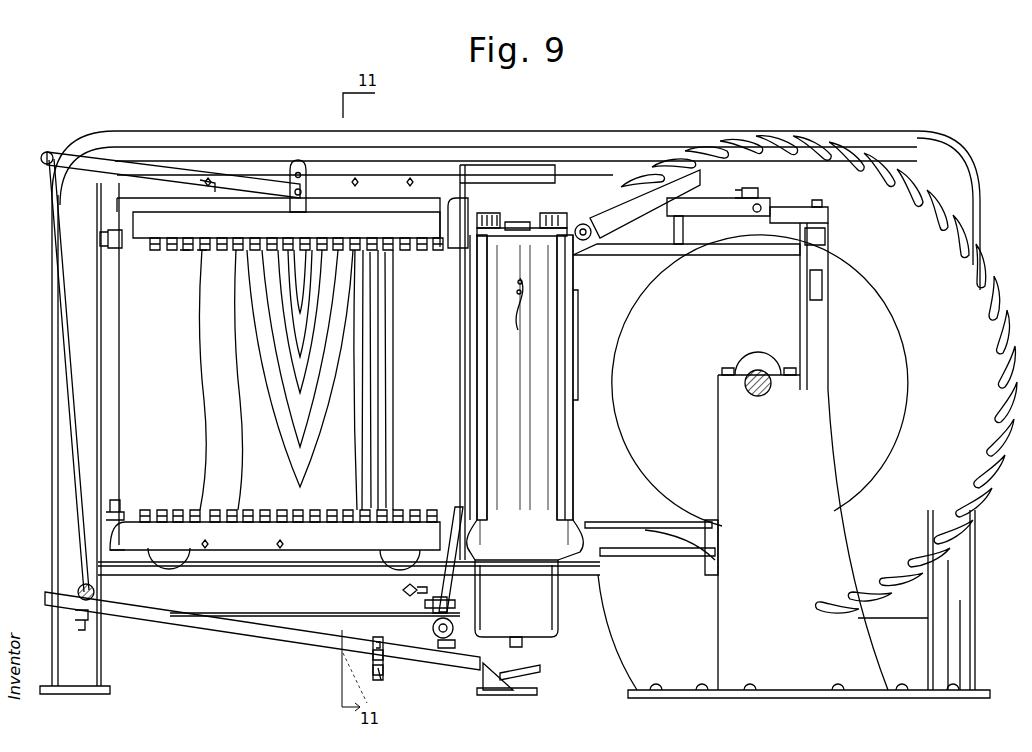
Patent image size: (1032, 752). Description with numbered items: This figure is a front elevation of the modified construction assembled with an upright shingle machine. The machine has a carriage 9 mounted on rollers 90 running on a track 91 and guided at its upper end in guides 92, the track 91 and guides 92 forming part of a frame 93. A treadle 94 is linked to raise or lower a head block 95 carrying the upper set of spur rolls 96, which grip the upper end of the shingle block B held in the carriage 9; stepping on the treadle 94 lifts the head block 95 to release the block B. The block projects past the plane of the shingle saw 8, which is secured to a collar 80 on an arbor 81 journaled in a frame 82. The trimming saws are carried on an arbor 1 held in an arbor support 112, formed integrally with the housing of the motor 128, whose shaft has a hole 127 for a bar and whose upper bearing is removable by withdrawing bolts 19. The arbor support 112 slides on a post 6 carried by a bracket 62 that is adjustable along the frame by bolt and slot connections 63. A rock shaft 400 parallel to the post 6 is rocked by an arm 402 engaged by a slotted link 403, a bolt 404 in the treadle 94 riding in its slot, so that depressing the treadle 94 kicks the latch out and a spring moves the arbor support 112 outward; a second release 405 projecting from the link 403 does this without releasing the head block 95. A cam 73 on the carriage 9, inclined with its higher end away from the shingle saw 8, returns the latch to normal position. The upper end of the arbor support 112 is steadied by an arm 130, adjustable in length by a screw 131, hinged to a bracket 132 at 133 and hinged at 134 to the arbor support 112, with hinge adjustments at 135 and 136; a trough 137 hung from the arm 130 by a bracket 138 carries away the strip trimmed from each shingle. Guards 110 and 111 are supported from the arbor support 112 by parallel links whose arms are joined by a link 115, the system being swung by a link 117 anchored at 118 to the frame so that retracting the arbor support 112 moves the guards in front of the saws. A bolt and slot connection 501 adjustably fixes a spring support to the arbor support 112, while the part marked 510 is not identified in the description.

The arbor 1 is at (507, 214).
The post 6 is at (455, 628).
The shingle saw 8 is at (819, 374).
The carriage 9 is at (120, 342).
The bolts 19 is at (522, 332).
The bracket 62 is at (433, 605).
The bolt and slot connections 63 is at (403, 590).
The cam 73 is at (287, 560).
The collar 80 is at (760, 380).
The arbor 81 is at (760, 395).
The frame 82 is at (787, 533).
The rollers 90 is at (168, 562).
The track 91 is at (215, 575).
The guides 92 is at (442, 148).
The frame 93 is at (62, 456).
The treadle 94 is at (248, 635).
The head block 95 is at (340, 228).
The spur rolls 96 is at (200, 250).
The guard 110 is at (473, 215).
The guard 111 is at (477, 533).
The arbor support 112 is at (550, 478).
The link 115 is at (473, 362).
The link 117 is at (437, 552).
The anchorage 118 is at (420, 613).
The hole 127 is at (520, 645).
The motor 128 is at (516, 598).
The arm 130 is at (652, 198).
The screw 131 is at (750, 196).
The bracket 132 is at (822, 355).
The hinge 133 is at (818, 200).
The hinge 134 is at (567, 212).
The hinge connection 135 is at (588, 222).
The hinge connection 136 is at (763, 207).
The trough 137 is at (630, 250).
The bracket 138 is at (680, 233).
The rock shaft 400 is at (434, 634).
The arm 402 is at (407, 642).
The slotted link 403 is at (373, 670).
The bolt 404 is at (375, 659).
The release 405 is at (372, 677).
The bolt and slot connection 501 is at (473, 300).
The rail 510 is at (573, 320).
The block B is at (352, 405).